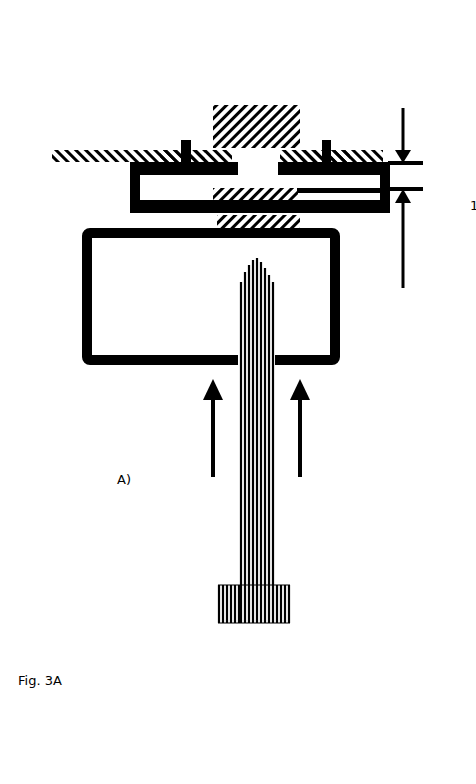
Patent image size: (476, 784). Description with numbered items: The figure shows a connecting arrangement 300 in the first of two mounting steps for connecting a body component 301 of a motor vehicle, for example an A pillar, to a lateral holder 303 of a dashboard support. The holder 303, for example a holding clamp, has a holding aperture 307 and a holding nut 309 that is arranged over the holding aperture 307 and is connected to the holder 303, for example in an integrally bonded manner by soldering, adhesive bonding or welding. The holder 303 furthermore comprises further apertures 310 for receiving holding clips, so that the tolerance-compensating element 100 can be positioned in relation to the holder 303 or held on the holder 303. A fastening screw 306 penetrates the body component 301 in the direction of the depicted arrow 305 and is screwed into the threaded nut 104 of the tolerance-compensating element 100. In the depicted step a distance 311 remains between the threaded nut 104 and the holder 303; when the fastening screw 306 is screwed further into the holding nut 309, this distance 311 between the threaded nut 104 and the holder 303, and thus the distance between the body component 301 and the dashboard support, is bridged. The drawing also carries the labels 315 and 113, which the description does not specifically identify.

The sensor assembly 300 is at (392, 48).
The tolerance-compensating element 100 is at (100, 189).
The lateral holder 303 is at (90, 157).
The further apertures 310 is at (182, 157).
The electrical pins 315 is at (185, 147).
The holding aperture 307 is at (250, 158).
The holding nut 309 is at (280, 110).
The opening 113 is at (262, 168).
The distance 311 is at (412, 178).
The threaded nut 104 is at (276, 238).
The body component 301 is at (340, 357).
The fastening screw 306 is at (265, 556).
The arrow 305 is at (303, 438).